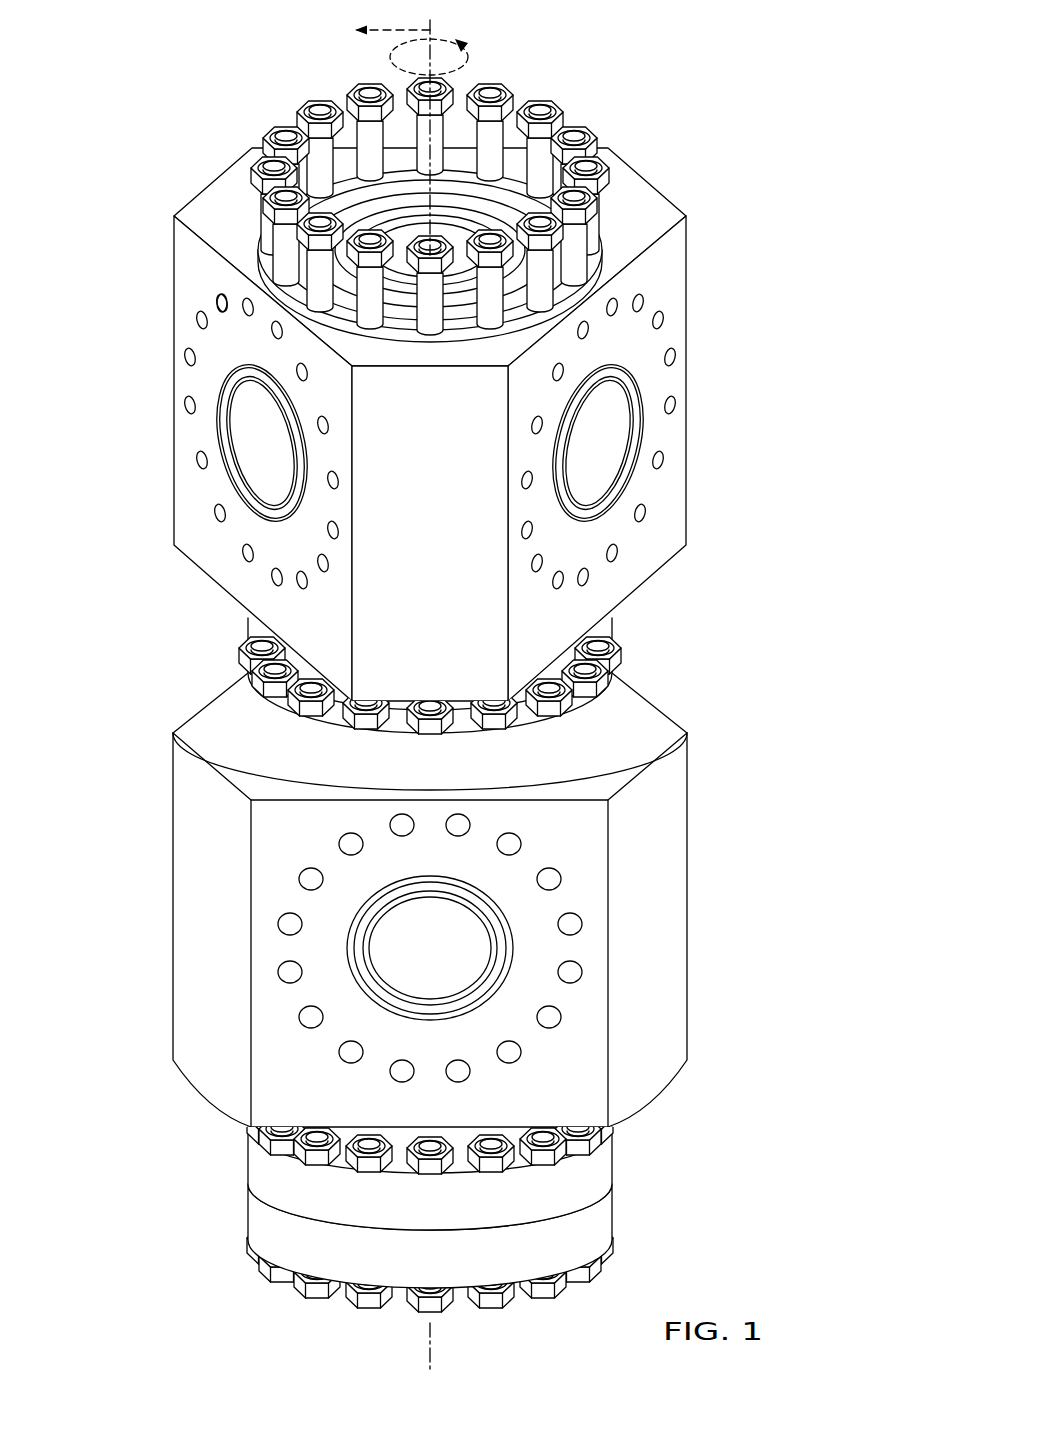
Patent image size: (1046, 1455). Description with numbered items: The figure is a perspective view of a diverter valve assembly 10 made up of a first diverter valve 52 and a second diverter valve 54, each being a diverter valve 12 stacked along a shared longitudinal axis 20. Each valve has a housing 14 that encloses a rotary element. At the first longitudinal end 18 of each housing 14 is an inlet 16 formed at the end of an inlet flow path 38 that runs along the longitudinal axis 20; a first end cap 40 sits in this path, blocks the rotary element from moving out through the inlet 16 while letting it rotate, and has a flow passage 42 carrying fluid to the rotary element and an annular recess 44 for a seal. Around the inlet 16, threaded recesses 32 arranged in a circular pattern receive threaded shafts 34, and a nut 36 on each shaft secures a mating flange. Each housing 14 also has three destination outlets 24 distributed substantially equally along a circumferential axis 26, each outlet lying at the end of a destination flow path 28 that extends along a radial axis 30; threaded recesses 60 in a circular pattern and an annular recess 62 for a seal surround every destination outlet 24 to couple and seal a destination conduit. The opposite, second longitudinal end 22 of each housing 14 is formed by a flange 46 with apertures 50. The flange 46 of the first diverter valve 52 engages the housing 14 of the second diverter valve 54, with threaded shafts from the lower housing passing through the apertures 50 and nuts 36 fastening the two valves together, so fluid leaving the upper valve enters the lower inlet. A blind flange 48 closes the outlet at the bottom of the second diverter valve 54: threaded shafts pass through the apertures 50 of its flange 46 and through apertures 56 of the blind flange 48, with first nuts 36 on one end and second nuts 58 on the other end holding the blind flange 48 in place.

The diverter valve assembly 10 is at (458, 686).
The diverter valve 12 is at (481, 686).
The housing 14 is at (509, 637).
The inlet 16 is at (449, 237).
The first longitudinal end 18 is at (634, 146).
The longitudinal axis 20 is at (433, 42).
The second longitudinal end 22 is at (524, 789).
The destination outlet 24 is at (250, 428).
The circumferential axis 26 is at (392, 53).
The destination flow path 28 is at (240, 404).
The radial axis 30 is at (393, 30).
The threaded recess 32 is at (364, 332).
The threaded shaft 34 is at (282, 236).
The nut 36 is at (270, 136).
The inlet flow path 38 is at (356, 210).
The first end cap 40 is at (507, 203).
The flow passage 42 is at (383, 223).
The annular recess 44 is at (608, 178).
The flange 46 is at (588, 718).
The blind flange 48 is at (600, 1198).
The aperture 50 is at (292, 704).
The first diverter valve 52 is at (509, 424).
The second diverter valve 54 is at (700, 896).
The aperture 56 is at (292, 1268).
The second nut 58 is at (413, 1294).
The threaded recess 60 is at (200, 322).
The annular recess 62 is at (238, 470).